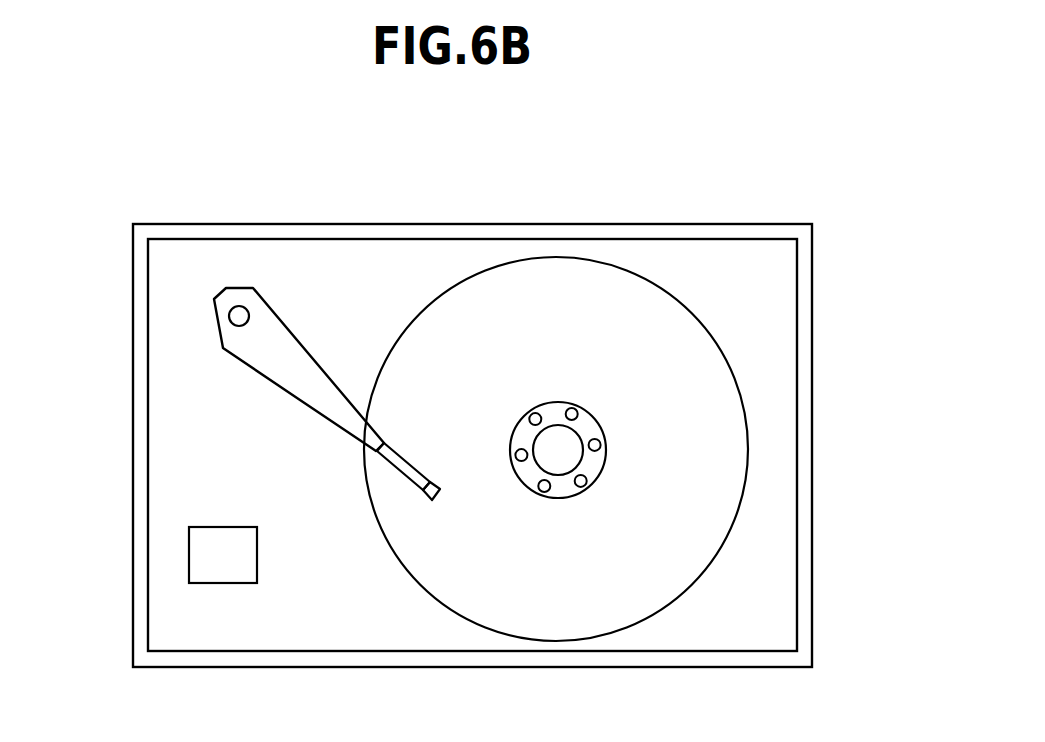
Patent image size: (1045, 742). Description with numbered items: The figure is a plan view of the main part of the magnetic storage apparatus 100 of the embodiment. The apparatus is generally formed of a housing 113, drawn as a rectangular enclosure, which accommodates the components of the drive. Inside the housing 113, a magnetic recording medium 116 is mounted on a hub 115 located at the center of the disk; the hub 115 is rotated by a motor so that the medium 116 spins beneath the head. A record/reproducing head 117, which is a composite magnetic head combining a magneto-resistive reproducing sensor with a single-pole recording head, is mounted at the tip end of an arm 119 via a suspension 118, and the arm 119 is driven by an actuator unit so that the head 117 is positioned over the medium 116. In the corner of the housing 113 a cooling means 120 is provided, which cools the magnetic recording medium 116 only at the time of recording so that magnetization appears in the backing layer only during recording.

The magnetic storage apparatus 100 is at (707, 167).
The housing 113 is at (802, 647).
The hub 115 is at (588, 430).
The magnetic recording medium 116 is at (598, 285).
The record/reproducing head 117 is at (435, 482).
The suspension 118 is at (410, 463).
The arm 119 is at (297, 405).
The cooling means 120 is at (189, 550).